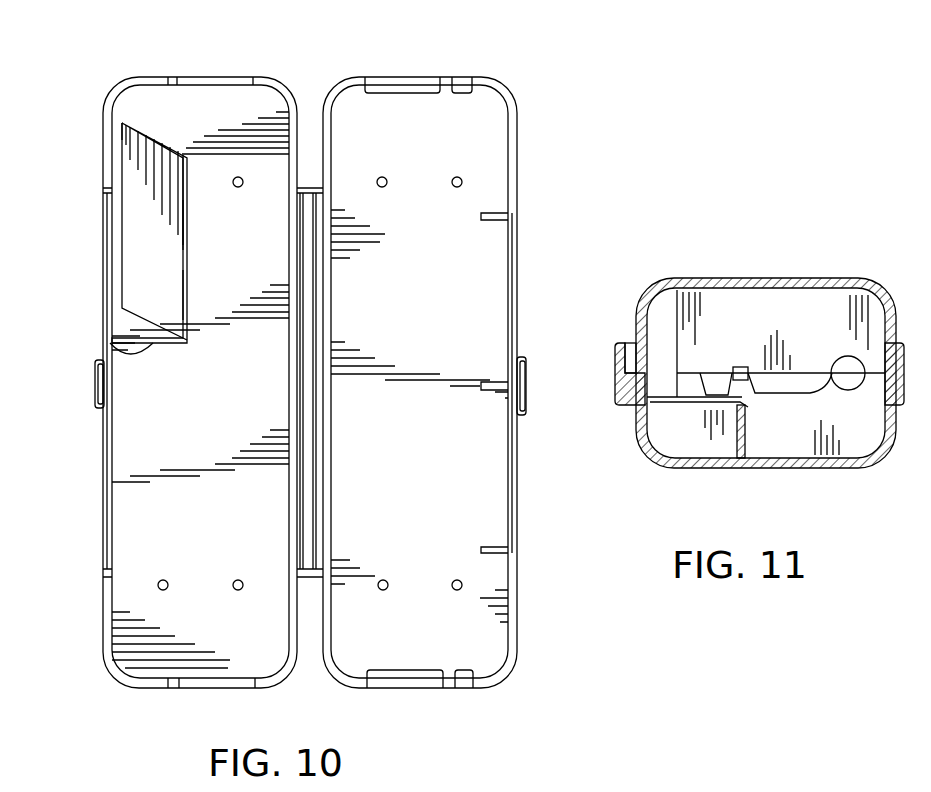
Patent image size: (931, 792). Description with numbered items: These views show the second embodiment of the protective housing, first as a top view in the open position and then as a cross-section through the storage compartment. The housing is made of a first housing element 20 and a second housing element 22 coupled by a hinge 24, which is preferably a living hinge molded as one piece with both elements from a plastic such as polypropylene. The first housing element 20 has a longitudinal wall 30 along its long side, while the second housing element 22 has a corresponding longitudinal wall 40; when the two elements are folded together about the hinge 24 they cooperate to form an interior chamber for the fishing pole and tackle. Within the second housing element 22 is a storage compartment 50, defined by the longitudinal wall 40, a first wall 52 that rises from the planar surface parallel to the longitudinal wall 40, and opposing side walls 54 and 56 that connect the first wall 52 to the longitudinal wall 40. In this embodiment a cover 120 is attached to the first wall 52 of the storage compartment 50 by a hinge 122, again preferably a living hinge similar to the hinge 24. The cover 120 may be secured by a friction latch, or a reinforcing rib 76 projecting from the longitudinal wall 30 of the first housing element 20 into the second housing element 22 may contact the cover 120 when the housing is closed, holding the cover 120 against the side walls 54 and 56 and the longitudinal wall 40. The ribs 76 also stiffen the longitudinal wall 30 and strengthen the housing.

In FIG. 10, the first housing element 20 is at (519, 79).
In FIG. 10, the second housing element 22 is at (97, 84).
In FIG. 10, the hinge 24 is at (310, 187).
In FIG. 10, the longitudinal wall 30 is at (519, 273).
In FIG. 10, the longitudinal wall 40 is at (104, 275).
In FIG. 10, the side wall 54 is at (116, 128).
In FIG. 10, the side wall 56 is at (110, 344).
In FIG. 10, the cover 120 is at (150, 165).
In FIG. 11, the cover 120 is at (644, 426).
In FIG. 11, the reinforcing rib 76 is at (665, 325).
In FIG. 11, the storage compartment 50 is at (687, 442).
In FIG. 11, the first wall 52 is at (737, 430).
In FIG. 11, the hinge 122 is at (743, 402).